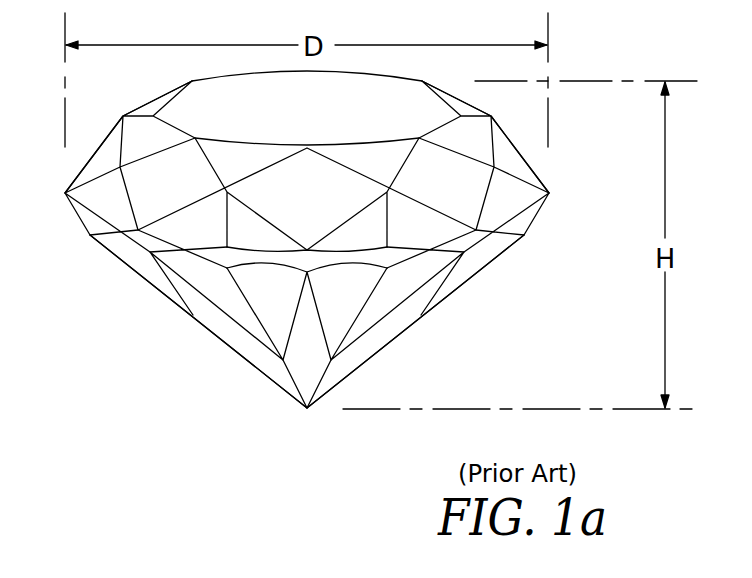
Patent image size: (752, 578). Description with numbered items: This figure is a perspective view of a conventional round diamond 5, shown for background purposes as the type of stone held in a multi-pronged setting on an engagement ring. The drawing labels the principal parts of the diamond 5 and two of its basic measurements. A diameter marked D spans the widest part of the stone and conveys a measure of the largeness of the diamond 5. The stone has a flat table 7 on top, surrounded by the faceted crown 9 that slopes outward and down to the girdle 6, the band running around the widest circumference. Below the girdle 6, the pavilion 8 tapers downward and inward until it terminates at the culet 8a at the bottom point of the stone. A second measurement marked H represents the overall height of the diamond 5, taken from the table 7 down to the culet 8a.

The round diamond 5 is at (157, 359).
The girdle 6 is at (150, 248).
The table 7 is at (367, 97).
The pavilion 8 is at (413, 285).
The culet 8a is at (305, 410).
The crown 9 is at (104, 158).